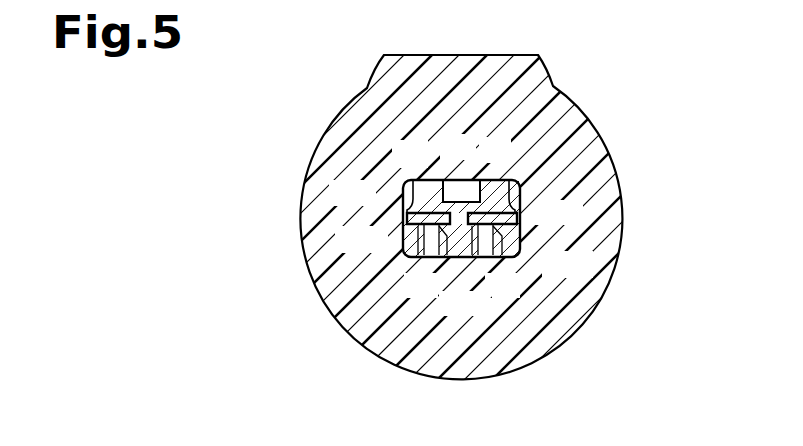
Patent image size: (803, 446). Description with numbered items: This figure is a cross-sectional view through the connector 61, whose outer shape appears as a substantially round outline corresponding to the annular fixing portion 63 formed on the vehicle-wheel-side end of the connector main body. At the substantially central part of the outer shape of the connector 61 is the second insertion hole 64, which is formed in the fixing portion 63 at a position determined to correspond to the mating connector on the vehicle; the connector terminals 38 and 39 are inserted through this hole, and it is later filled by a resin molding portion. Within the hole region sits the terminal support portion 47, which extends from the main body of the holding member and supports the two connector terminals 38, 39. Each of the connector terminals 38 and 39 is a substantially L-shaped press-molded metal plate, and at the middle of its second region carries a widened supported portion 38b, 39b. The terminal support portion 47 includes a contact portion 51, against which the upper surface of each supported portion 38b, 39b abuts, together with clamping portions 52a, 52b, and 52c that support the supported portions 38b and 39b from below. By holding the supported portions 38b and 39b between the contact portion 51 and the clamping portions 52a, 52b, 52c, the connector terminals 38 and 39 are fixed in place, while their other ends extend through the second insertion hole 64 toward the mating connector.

The connector 61 is at (578, 334).
The fixing portion 63 is at (430, 377).
The clamping portion 52a is at (520, 246).
The clamping portion 52b is at (463, 260).
The clamping portion 52c is at (405, 228).
The contact portion 51 is at (452, 184).
The second insertion hole 64 is at (414, 185).
The terminal support portion 47 is at (494, 185).
The supported portion 39b is at (403, 210).
The supported portion 38b is at (521, 215).
The connector terminal 39 is at (438, 257).
The connector terminal 38 is at (489, 257).